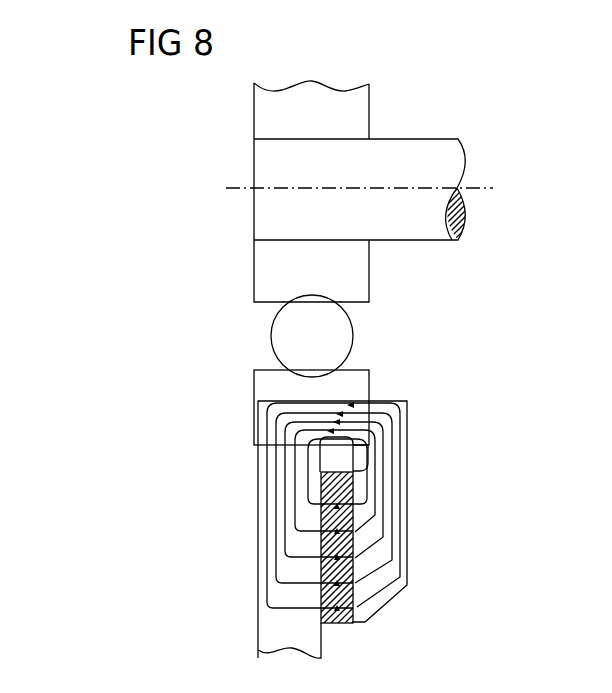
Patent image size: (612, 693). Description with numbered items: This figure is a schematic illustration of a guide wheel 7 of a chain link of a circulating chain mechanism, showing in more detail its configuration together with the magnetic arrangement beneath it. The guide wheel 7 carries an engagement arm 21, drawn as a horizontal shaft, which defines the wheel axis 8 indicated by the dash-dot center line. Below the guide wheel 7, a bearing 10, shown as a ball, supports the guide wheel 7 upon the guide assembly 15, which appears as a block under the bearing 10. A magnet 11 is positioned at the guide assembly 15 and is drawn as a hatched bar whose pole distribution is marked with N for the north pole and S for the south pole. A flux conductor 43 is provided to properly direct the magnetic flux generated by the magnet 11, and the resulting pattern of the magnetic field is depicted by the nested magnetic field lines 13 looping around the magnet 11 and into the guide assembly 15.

The guide wheel 7 is at (226, 156).
The wheel axis 8 is at (493, 188).
The bearing 10 is at (333, 343).
The magnet 11 is at (337, 626).
The magnetic field lines 13 is at (393, 457).
The guide assembly 15 is at (378, 387).
The engagement arm 21 is at (402, 143).
The flux conductor 43 is at (384, 507).